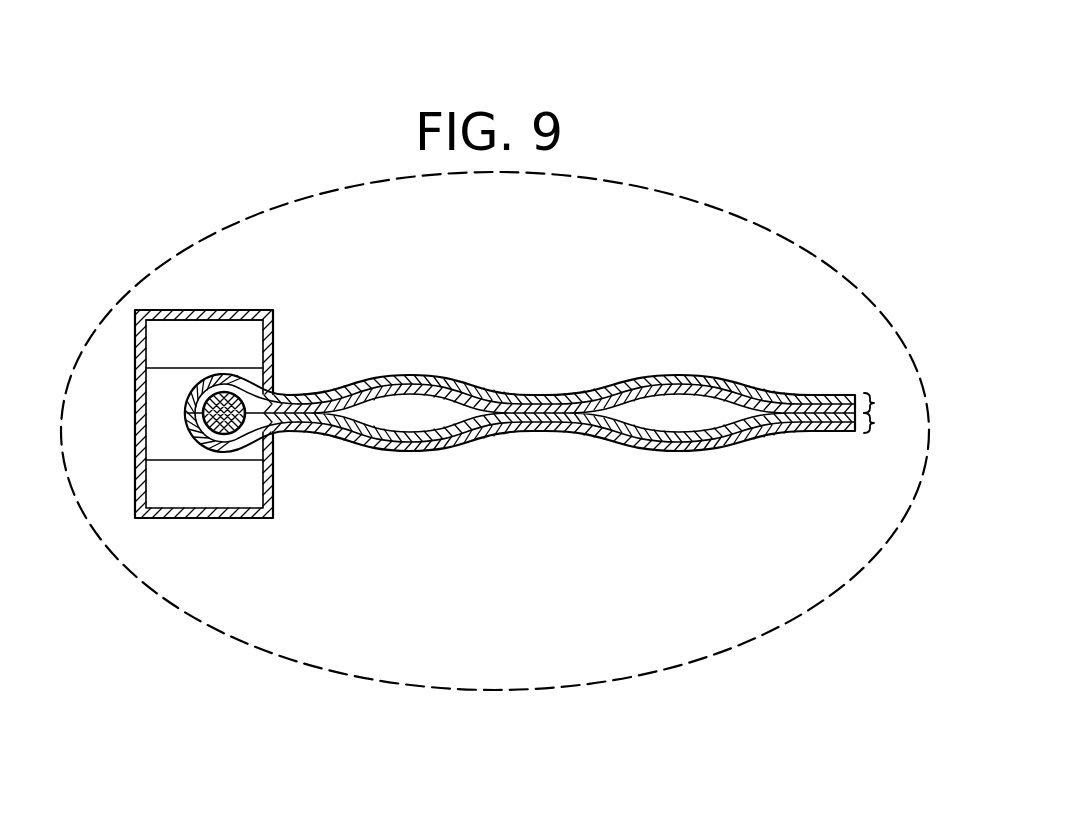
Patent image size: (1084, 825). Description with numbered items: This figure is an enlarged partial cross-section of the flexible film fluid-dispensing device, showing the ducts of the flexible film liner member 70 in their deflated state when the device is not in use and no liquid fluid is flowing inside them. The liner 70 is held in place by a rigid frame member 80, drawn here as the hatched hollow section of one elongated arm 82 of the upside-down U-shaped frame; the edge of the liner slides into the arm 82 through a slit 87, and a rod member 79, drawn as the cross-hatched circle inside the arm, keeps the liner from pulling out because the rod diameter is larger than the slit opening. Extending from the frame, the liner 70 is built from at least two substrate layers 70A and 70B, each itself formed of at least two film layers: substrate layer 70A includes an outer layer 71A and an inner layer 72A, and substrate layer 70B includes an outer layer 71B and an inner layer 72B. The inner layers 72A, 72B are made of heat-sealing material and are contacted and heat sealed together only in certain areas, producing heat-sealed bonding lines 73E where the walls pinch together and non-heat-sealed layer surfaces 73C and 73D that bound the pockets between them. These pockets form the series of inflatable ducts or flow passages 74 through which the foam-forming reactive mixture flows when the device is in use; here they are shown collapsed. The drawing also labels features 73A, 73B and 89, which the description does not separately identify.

The flexible film liner member 70 is at (491, 265).
The substrate layer 70A is at (881, 400).
The substrate layer 70B is at (881, 428).
The outer layer 71A is at (407, 380).
The outer layer 71B is at (363, 444).
The inner layer 72A is at (577, 400).
The inner layer 72B is at (507, 434).
The upper wall of second bulge 73A is at (741, 395).
The lower wall of second bulge 73B is at (642, 450).
The layer surface 73C is at (351, 401).
The layer surface 73D is at (452, 438).
The bonding line 73E is at (308, 432).
The inflatable ducts 74 is at (427, 407).
The rod member 79 is at (189, 432).
The rigid frame member 80 is at (118, 343).
The elongated arm 82 is at (203, 310).
The slit 87 is at (282, 398).
The housing compartment 89 is at (247, 345).